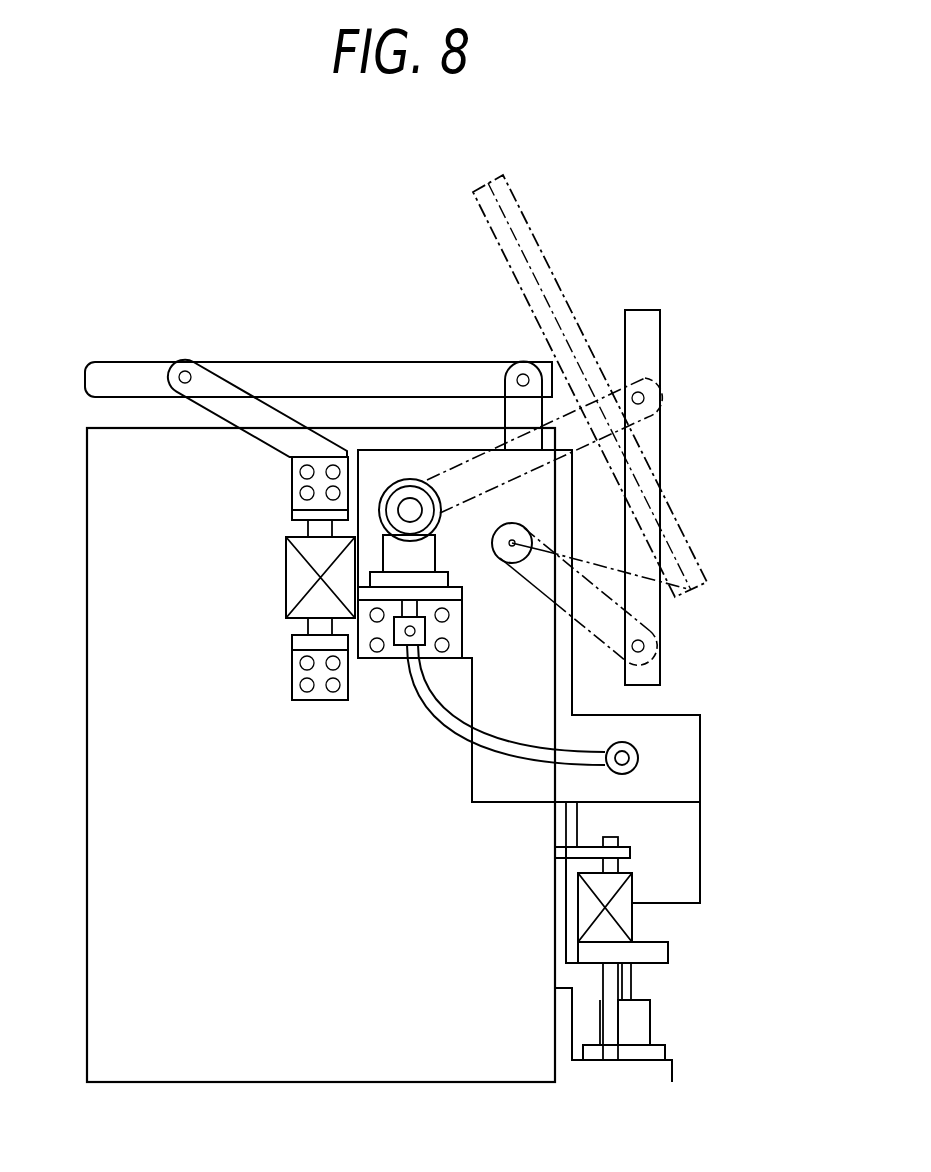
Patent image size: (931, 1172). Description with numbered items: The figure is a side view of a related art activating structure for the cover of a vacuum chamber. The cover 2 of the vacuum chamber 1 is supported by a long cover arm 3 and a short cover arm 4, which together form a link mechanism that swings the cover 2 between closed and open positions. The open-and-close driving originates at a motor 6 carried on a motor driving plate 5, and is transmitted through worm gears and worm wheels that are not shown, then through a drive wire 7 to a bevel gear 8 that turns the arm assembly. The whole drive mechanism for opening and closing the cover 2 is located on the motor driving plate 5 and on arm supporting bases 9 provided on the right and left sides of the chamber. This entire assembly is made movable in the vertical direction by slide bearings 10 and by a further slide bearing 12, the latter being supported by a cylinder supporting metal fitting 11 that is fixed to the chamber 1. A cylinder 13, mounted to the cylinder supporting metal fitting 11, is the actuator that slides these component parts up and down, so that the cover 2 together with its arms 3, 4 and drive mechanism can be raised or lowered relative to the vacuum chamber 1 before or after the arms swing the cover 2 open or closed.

The vacuum chamber 1 is at (100, 632).
The cover 2 is at (130, 362).
The cover arm (long) 3 is at (232, 410).
The cover arm (short) 4 is at (522, 415).
The motor driving plate 5 is at (668, 955).
The motor 6 is at (685, 858).
The drive wire 7 is at (435, 722).
The bevel gear 8 is at (410, 480).
The arm supporting base 9 is at (512, 803).
The slide bearing 10 is at (292, 489).
The cylinder supporting metal fitting 11 is at (608, 1070).
The slide bearing 12 is at (286, 578).
The cylinder 13 is at (640, 1020).